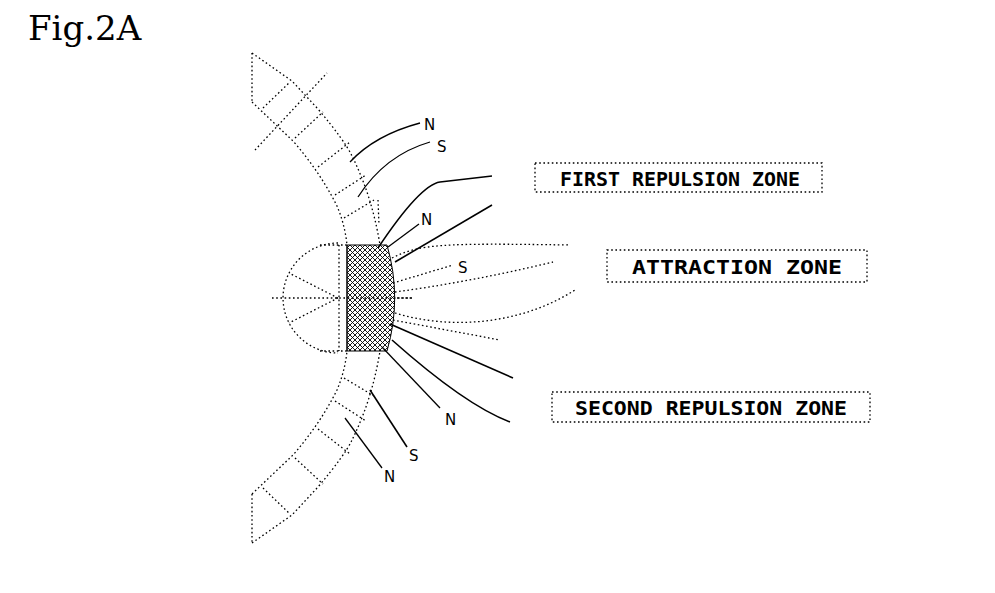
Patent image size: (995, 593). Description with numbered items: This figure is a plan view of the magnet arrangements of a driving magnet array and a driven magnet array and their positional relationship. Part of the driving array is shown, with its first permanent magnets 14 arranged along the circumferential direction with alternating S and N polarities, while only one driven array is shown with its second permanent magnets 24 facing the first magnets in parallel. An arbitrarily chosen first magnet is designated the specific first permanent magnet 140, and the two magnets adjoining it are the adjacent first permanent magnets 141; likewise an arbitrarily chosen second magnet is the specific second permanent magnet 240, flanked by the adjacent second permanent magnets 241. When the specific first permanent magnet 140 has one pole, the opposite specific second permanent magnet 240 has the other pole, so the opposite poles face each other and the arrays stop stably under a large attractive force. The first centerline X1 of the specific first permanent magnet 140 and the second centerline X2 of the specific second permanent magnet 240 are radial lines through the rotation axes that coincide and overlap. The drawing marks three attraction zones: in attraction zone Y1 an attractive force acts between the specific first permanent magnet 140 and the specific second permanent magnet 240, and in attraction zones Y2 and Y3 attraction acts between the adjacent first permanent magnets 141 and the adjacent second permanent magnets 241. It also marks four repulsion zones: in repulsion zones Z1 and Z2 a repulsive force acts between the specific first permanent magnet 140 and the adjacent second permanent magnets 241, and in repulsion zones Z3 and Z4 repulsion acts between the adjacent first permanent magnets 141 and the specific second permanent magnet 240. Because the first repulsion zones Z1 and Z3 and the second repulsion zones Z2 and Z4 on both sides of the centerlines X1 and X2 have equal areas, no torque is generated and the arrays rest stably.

The first permanent magnets 14 is at (333, 143).
The adjacent first permanent magnets 141 is at (378, 200).
The second permanent magnets 24 is at (318, 328).
The specific second permanent magnet 240 is at (347, 292).
The adjacent second permanent magnets 241 is at (340, 257).
The specific first permanent magnet 140 is at (465, 336).
The first centerline X1 is at (305, 108).
The second centerline X2 is at (453, 300).
The attraction zone Y1 is at (486, 275).
The attraction zone Y2 is at (495, 246).
The attraction zone Y3 is at (497, 302).
The first repulsion zone Z1 is at (448, 205).
The second repulsion zone Z2 is at (466, 388).
The first repulsion zone Z3 is at (456, 226).
The second repulsion zone Z4 is at (465, 360).